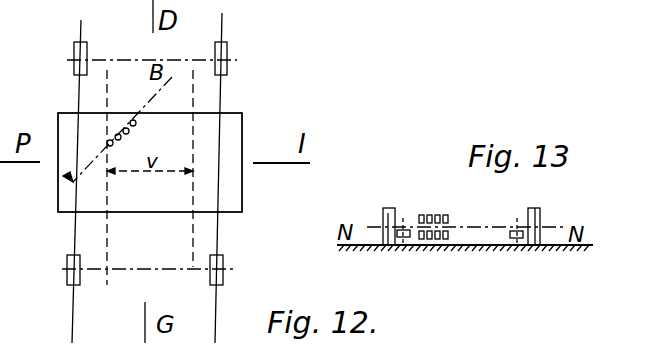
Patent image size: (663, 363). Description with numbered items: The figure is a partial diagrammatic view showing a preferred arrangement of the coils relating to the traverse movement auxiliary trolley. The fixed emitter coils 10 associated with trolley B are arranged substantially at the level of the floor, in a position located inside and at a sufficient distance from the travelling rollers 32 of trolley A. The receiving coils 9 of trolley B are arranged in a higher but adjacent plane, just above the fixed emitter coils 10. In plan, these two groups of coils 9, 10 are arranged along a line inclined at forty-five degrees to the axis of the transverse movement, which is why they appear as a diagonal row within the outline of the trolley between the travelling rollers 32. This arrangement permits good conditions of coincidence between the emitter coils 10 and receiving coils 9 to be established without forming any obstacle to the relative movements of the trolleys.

In FIG. 12, the receiving coils of trolley B 9 is at (147, 135).
In FIG. 13, the receiving coils of trolley B 9 is at (422, 215).
In FIG. 12, the fixed emitter coils 10 is at (129, 133).
In FIG. 13, the fixed emitter coils 10 is at (422, 239).
In FIG. 12, the travelling rollers 32 is at (73, 277).
In FIG. 13, the travelling rollers 32 is at (392, 209).